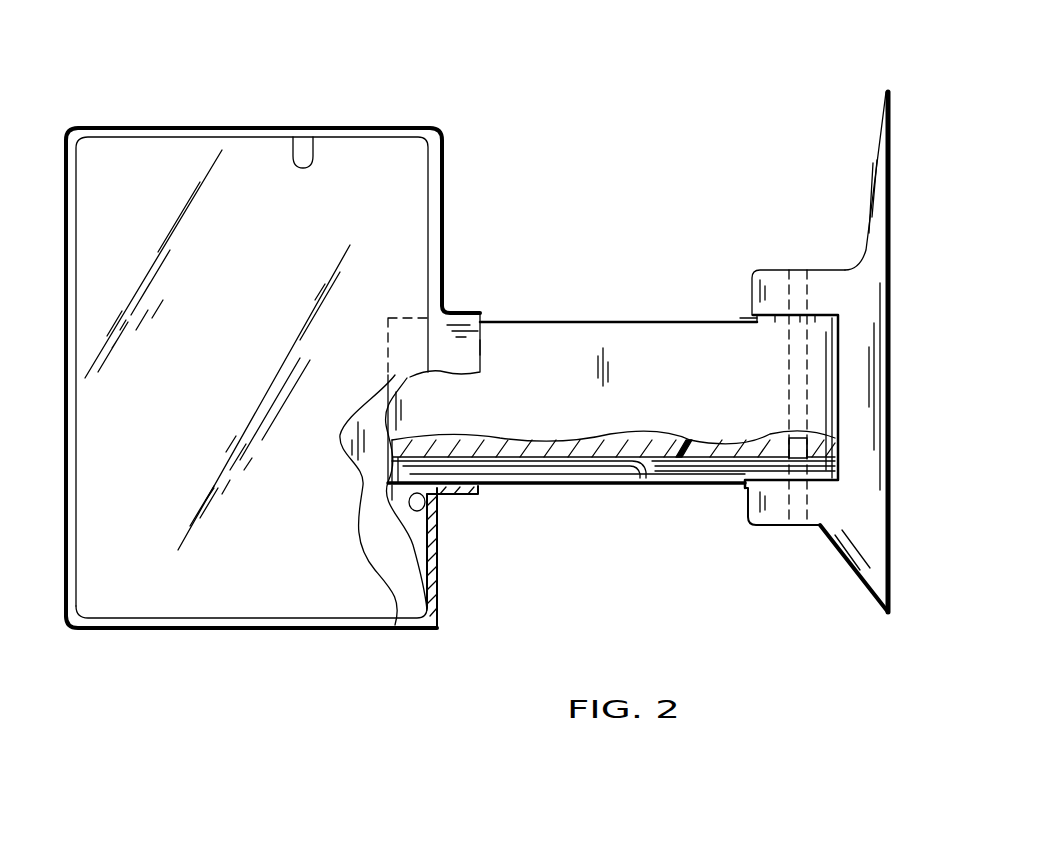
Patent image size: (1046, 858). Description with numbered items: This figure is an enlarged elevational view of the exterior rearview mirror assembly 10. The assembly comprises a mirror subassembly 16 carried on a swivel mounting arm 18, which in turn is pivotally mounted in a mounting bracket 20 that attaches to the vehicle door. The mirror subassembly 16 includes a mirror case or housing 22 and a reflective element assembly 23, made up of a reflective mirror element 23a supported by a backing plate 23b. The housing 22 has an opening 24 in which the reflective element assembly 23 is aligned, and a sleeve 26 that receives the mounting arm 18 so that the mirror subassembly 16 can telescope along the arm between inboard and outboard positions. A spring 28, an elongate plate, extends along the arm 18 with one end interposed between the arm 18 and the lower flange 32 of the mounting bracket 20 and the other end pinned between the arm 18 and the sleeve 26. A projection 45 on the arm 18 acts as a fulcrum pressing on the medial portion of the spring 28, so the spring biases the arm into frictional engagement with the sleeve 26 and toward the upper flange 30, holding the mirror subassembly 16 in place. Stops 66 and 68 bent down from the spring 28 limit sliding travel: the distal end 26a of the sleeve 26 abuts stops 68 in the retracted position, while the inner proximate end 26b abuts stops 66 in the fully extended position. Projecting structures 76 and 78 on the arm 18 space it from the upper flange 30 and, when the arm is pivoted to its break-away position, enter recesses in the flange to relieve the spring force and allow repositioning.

The exterior rearview mirror assembly 10 is at (671, 155).
The mirror subassembly 16 is at (447, 202).
The swivel mounting arm 18 is at (603, 314).
The mounting bracket 20 is at (848, 258).
The mirror case or housing 22 is at (229, 128).
The reflective element assembly 23 is at (396, 567).
The reflective mirror element 23a is at (300, 597).
The backing plate 23b is at (357, 450).
The opening 24 is at (313, 137).
The sleeve 26 is at (455, 312).
The distal end of sleeve 26a is at (480, 347).
The inner proximate end of sleeve 26b is at (425, 506).
The spring 28 is at (543, 481).
The upper flange 30 is at (765, 283).
The lower flange 32 is at (760, 527).
The projection 45 is at (690, 487).
The stops 66 is at (392, 495).
The stops 68 is at (645, 487).
The projecting structure 76 is at (753, 312).
The projecting structure 78 is at (823, 315).